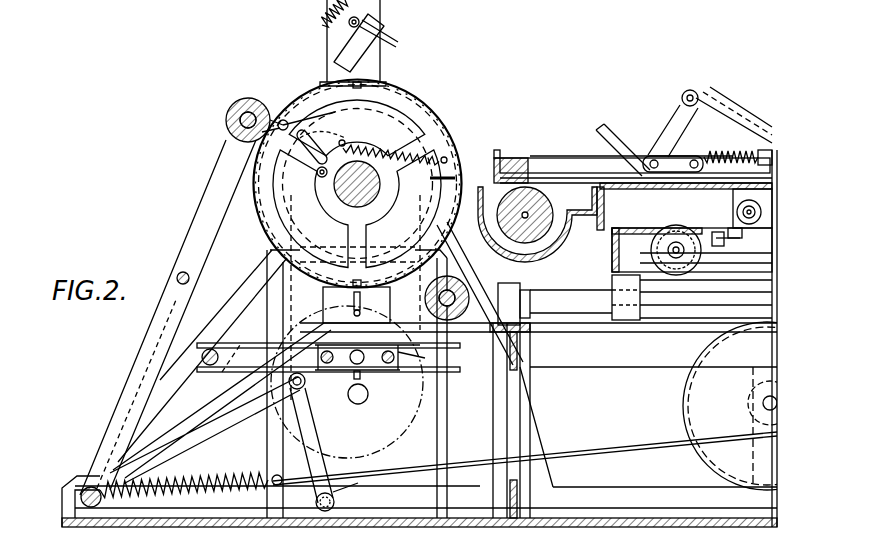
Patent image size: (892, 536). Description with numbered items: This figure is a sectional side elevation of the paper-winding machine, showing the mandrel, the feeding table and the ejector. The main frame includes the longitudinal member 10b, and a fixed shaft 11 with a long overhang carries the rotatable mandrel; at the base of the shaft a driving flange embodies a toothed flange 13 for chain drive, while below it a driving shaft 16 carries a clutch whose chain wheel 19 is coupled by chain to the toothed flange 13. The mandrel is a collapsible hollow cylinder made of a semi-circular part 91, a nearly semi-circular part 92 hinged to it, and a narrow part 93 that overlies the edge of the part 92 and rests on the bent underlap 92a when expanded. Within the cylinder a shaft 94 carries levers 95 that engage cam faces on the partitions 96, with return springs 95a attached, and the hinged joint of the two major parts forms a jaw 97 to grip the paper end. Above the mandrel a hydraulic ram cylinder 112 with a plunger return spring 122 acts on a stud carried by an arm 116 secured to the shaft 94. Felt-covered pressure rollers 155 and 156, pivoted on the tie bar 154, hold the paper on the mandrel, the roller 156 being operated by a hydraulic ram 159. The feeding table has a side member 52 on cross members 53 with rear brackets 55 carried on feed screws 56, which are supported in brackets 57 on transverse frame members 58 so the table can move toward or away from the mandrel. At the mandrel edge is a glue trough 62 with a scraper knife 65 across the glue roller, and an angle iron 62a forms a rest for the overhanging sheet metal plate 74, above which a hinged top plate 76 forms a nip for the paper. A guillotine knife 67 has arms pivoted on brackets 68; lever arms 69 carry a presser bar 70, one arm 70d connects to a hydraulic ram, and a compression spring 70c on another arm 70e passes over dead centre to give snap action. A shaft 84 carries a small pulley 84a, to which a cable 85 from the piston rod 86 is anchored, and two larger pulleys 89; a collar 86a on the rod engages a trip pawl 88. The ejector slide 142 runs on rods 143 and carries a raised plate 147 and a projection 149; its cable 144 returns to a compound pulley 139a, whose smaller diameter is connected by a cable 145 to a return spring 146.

The longitudinal member 10b is at (645, 365).
The toothed flange 13 is at (392, 98).
The semi-circular part 91 is at (257, 213).
The partitions 96 is at (362, 111).
The fixed shaft 11 is at (385, 148).
The levers 95 is at (309, 213).
The return springs 95a is at (420, 140).
The jaw 97 is at (460, 178).
The hydraulic ram cylinder 112 is at (372, 15).
The return spring 122 is at (333, 4).
The pressure roller 155 is at (247, 100).
The narrow part 93 is at (250, 158).
The nearly semi-circular part 92 is at (291, 118).
The underlap 92a is at (283, 122).
The arm 116 is at (320, 134).
The shaft 94 is at (316, 172).
The raised plate 147 is at (320, 300).
The cable 144 is at (400, 325).
The projection 149 is at (318, 346).
The ejector slide 142 is at (352, 362).
The driving shaft 16 is at (371, 388).
The rods 143 is at (412, 355).
The chain wheel 19 is at (422, 402).
The hydraulic ram 159 is at (342, 490).
The pressure roller 156 is at (476, 292).
The return spring 146 is at (244, 478).
The tie bar 154 is at (94, 486).
The cable 145 is at (605, 440).
The lever arms 69 is at (536, 158).
The presser bar 70 is at (497, 150).
The scraper knife 65 is at (560, 208).
The glue trough 62 is at (543, 246).
The angle iron 62a is at (628, 208).
The side member 52 is at (692, 250).
The cross members 53 is at (614, 262).
The shaft 84 is at (668, 262).
The larger pulleys 89 is at (676, 272).
The small pulley 84a is at (718, 332).
The collar 86a is at (712, 262).
The piston rod 86 is at (758, 234).
The trip pawl 88 is at (735, 226).
The cable 85 is at (712, 236).
The sheet metal plate 74 is at (684, 190).
The brackets 57 is at (512, 292).
The rear brackets 55 is at (610, 298).
The transverse frame members 58 is at (520, 350).
The feed screws 56 is at (705, 330).
The compound pulley 139a is at (748, 403).
The guillotine knife 67 is at (598, 136).
The top plate 76 is at (626, 166).
The brackets 68 is at (658, 154).
The arm 70e is at (672, 150).
The arm 70d is at (682, 94).
The compression spring 70c is at (722, 148).